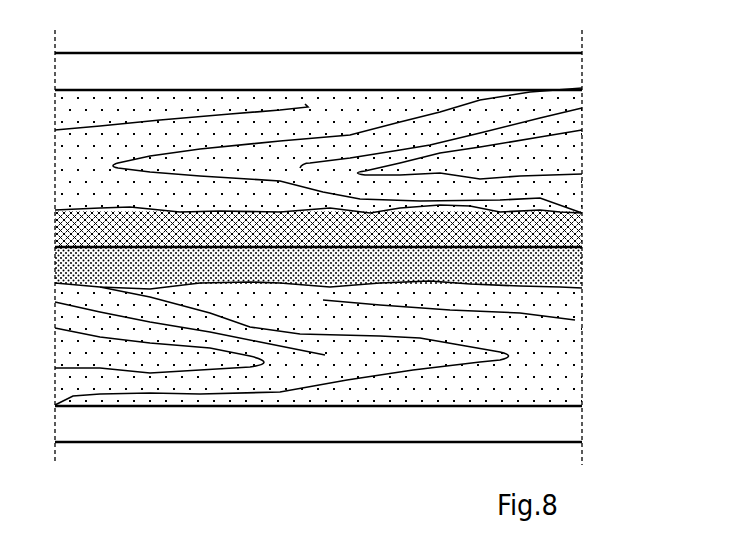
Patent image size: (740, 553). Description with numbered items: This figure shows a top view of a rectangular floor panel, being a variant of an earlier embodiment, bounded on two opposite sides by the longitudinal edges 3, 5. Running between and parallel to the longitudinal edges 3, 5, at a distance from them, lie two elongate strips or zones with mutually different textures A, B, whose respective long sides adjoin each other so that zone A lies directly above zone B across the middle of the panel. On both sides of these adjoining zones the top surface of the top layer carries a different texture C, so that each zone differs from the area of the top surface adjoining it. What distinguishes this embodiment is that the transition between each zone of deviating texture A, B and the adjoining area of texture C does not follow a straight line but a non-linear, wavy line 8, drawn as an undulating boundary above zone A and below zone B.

The longitudinal edge 3 is at (513, 88).
The longitudinal edge 5 is at (522, 407).
The wavy line 8 is at (537, 198).
The zone with deviating texture A is at (550, 228).
The zone with deviating texture B is at (550, 263).
The texture of adjoining top surface C is at (558, 134).